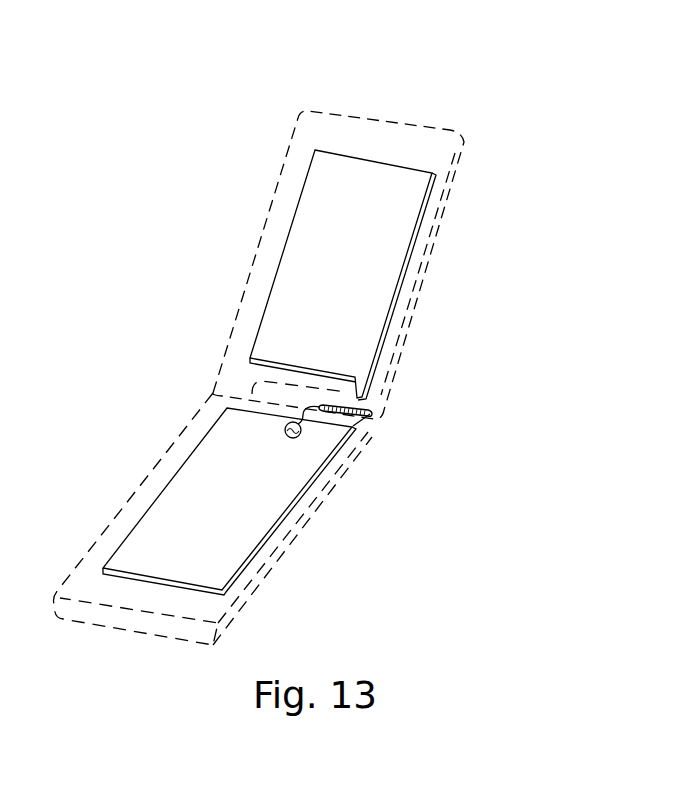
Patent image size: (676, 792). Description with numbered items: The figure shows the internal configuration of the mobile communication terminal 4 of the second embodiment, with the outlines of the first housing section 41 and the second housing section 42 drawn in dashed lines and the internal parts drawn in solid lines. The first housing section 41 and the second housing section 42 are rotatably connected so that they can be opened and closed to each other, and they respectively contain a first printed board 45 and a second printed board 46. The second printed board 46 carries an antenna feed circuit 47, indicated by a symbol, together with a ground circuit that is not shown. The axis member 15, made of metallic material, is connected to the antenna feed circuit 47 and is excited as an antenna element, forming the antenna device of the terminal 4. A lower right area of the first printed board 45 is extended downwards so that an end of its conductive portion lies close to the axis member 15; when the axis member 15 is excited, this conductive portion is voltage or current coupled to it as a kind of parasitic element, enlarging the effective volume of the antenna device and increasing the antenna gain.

The mobile communication terminal 4 is at (143, 248).
The first housing section 41 is at (432, 270).
The second housing section 42 is at (87, 548).
The first printed board 45 is at (395, 323).
The second printed board 46 is at (139, 516).
The antenna feed circuit 47 is at (303, 432).
The axis member 15 is at (362, 422).